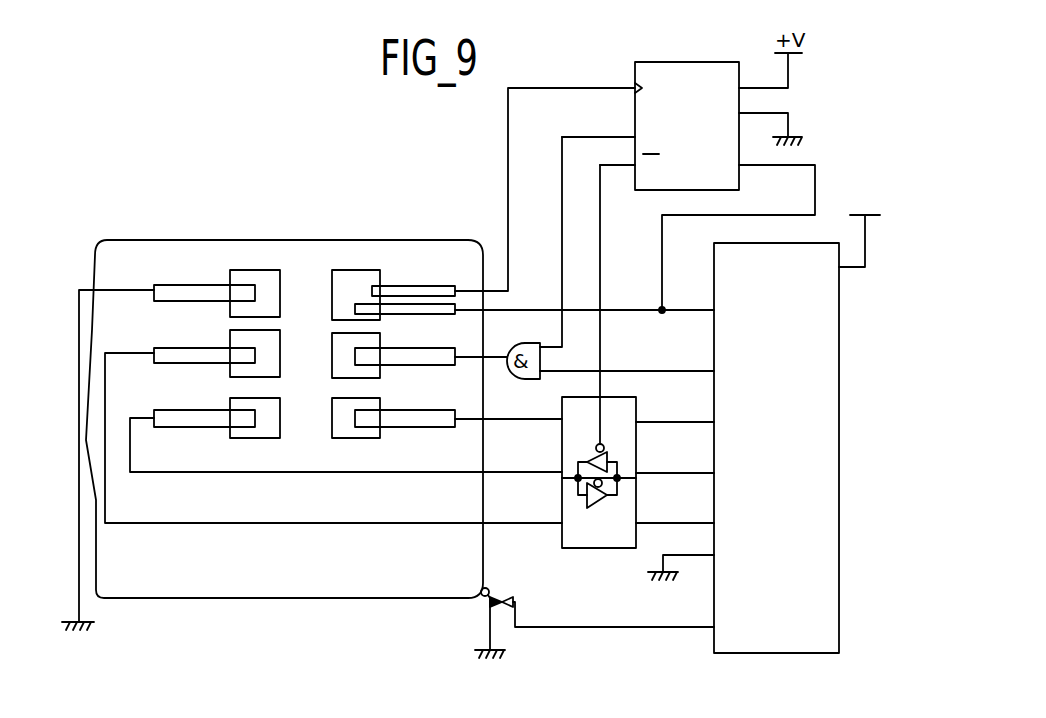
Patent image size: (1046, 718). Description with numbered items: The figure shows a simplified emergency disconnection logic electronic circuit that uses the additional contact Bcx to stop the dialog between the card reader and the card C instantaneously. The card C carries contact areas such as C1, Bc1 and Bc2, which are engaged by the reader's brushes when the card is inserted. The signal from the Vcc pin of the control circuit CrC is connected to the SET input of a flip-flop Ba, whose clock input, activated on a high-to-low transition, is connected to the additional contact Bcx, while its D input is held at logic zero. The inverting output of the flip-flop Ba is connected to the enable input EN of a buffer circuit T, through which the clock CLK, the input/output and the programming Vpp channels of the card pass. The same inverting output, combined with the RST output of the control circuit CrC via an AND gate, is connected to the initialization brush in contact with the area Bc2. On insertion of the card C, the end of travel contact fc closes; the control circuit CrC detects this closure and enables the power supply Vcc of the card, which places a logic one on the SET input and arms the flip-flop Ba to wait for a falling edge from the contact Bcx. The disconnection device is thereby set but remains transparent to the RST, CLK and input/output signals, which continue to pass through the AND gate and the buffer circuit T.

The card C is at (238, 580).
The card contact pads C1 is at (337, 272).
The additional contact Bcx is at (405, 287).
The contact bar 1 Bc1 is at (371, 303).
The area Bc2 is at (354, 356).
The end of travel contact fc is at (594, 623).
The RST output RST is at (694, 370).
The flip-flop Ba is at (666, 125).
The control circuit CrC is at (764, 422).
The power supply Vcc is at (692, 308).
The clock signal CLK is at (700, 420).
The programming channel Vpp is at (700, 522).
The buffer circuit T is at (541, 506).
The enable input EN is at (599, 356).